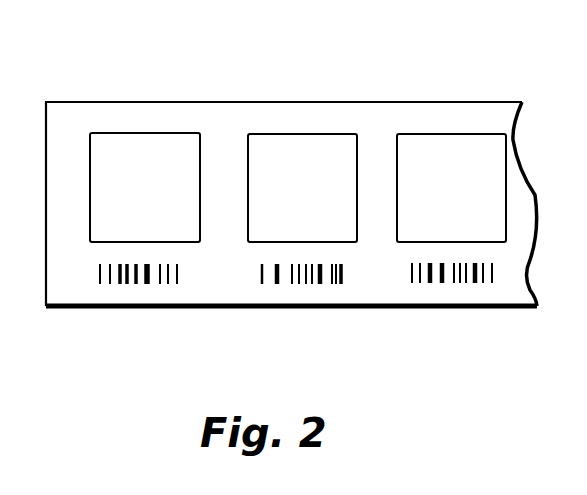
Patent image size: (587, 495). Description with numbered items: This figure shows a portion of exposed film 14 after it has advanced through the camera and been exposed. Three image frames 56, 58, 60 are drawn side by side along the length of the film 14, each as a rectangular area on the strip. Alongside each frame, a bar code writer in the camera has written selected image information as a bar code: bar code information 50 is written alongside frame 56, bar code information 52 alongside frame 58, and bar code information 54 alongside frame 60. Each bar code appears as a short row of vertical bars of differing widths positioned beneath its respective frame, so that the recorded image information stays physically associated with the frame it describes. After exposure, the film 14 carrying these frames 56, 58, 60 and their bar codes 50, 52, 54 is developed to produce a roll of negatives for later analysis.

The film 14 is at (327, 101).
The bar code information 50 is at (145, 289).
The bar code information 52 is at (301, 288).
The bar code information 54 is at (451, 285).
The frame 56 is at (126, 133).
The frame 58 is at (265, 134).
The frame 60 is at (438, 134).